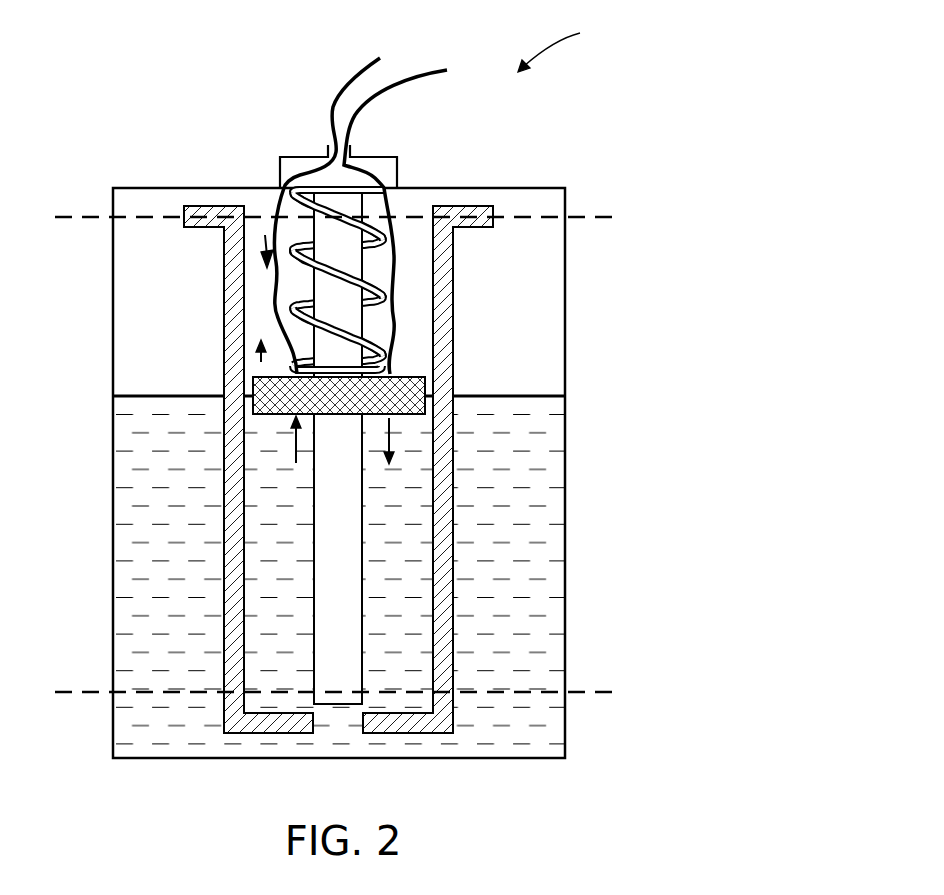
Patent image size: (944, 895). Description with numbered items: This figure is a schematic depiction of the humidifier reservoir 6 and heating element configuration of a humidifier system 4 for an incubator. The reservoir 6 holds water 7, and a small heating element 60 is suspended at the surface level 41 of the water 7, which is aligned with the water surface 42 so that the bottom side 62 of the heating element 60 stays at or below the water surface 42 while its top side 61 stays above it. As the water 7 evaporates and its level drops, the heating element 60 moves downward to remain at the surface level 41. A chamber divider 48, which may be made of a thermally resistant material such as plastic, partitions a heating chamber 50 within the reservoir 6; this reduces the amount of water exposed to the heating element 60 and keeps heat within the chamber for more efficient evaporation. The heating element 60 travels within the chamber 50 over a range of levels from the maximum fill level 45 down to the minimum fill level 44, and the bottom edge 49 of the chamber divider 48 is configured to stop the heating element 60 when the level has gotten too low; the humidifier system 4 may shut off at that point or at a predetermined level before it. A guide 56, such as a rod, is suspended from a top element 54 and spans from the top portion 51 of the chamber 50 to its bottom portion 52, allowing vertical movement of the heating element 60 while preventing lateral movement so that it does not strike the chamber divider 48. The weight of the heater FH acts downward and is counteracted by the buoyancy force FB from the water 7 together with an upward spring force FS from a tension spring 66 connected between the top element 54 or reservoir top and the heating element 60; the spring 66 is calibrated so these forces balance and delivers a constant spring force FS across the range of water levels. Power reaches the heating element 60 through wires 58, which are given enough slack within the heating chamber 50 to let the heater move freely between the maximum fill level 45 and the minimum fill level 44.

The humidifier system 4 is at (559, 46).
The humidifier reservoir 6 is at (566, 243).
The water 7 is at (553, 542).
The surface level 41 is at (102, 415).
The water surface 42 is at (521, 396).
The minimum fill level 44 is at (587, 692).
The maximum fill level 45 is at (590, 215).
The chamber divider 48 is at (232, 297).
The bottom edge 49 is at (272, 723).
The heating chamber 50 is at (264, 235).
The top portion 51 is at (300, 706).
The bottom portion 52 is at (410, 228).
The top element 54 is at (398, 160).
The guide 56 is at (330, 637).
The wires 58 is at (334, 91).
The heating element 60 is at (257, 406).
The top side 61 is at (405, 377).
The bottom side 62 is at (415, 418).
The tension spring 66 is at (340, 270).
The spring force FS is at (256, 361).
The buoyancy force FB is at (292, 462).
The weight of the heater FH is at (398, 437).